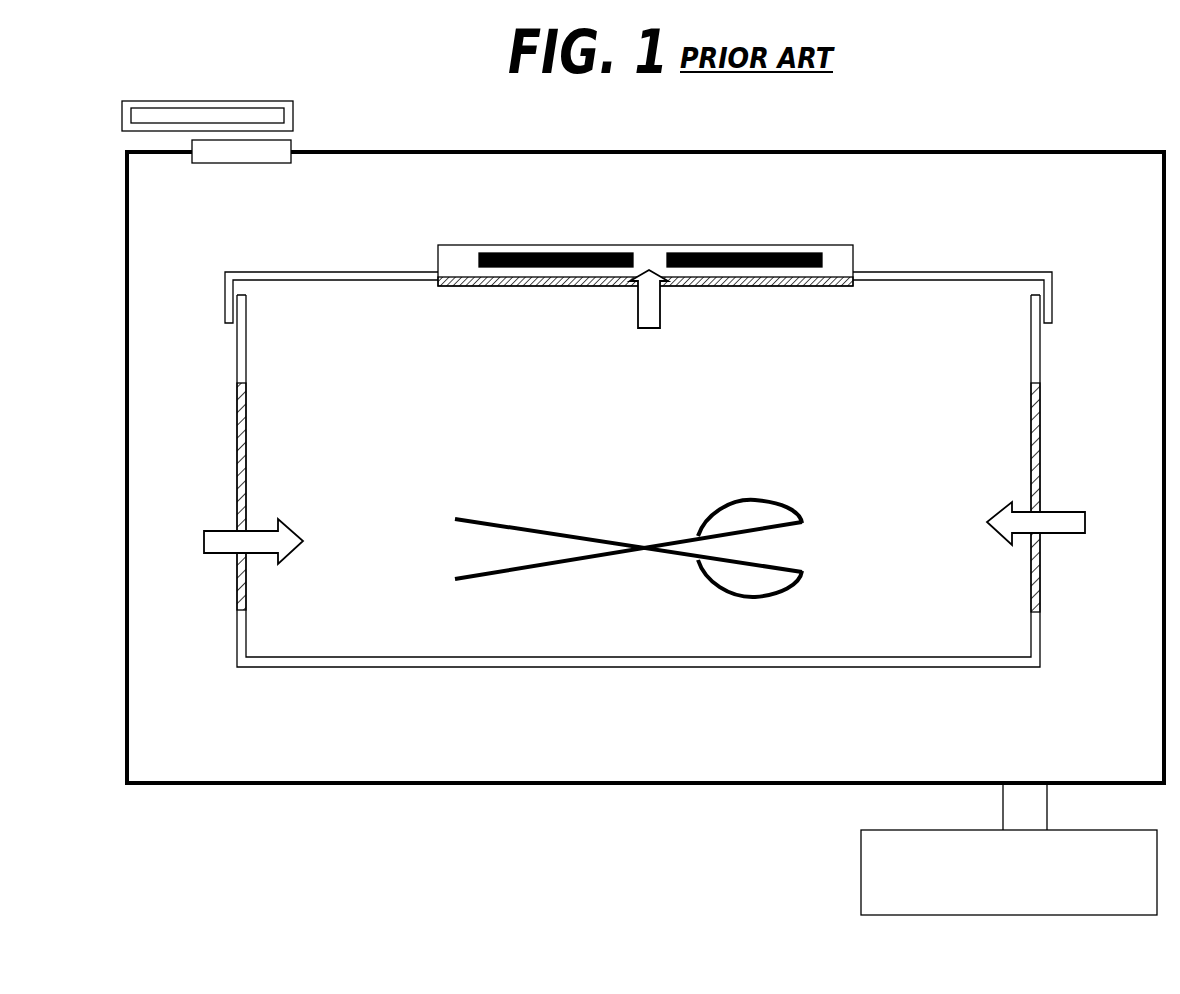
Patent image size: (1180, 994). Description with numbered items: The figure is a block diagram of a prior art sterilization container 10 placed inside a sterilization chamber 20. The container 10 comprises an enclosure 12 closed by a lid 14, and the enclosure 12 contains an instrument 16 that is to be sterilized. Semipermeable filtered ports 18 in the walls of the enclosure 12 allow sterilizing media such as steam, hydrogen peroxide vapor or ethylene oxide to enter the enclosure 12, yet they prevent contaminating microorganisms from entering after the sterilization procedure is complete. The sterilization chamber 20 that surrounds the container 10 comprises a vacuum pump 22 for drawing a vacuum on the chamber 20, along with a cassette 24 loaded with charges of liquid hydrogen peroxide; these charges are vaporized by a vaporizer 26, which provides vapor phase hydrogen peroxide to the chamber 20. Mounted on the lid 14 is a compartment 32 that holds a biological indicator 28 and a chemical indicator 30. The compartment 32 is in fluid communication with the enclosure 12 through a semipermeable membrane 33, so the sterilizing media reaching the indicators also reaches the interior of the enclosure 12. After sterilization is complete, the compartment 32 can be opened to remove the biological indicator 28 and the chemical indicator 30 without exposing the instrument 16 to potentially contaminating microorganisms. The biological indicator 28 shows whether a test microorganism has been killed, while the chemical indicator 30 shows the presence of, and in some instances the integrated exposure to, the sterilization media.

The sterilization container 10 is at (643, 489).
The enclosure 12 is at (676, 514).
The lid 14 is at (968, 270).
The instrument 16 is at (588, 560).
The semipermeable filtered ports 18 is at (1042, 445).
The sterilization chamber 20 is at (1002, 140).
The vacuum pump 22 is at (861, 873).
The cassette 24 is at (281, 117).
The vaporizer 26 is at (277, 155).
The biological indicator 28 is at (603, 250).
The chemical indicator 30 is at (810, 250).
The compartment 32 is at (647, 270).
The semipermeable membrane 33 is at (482, 288).